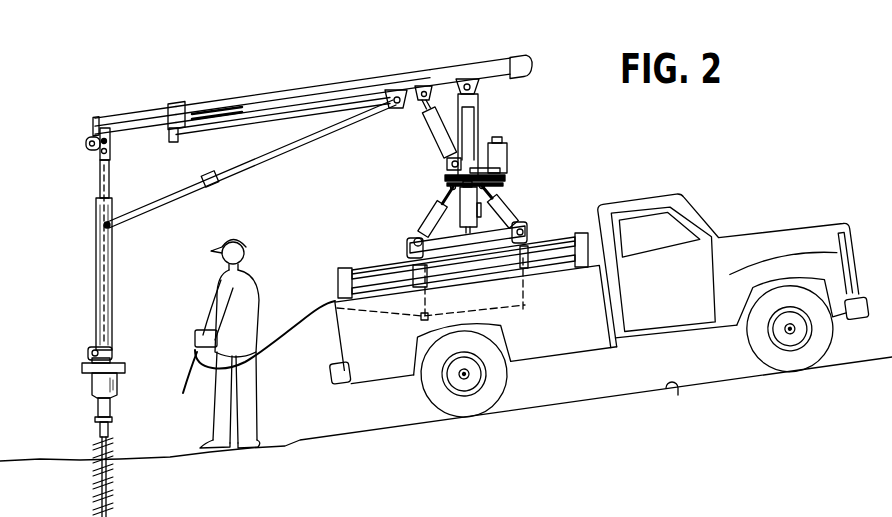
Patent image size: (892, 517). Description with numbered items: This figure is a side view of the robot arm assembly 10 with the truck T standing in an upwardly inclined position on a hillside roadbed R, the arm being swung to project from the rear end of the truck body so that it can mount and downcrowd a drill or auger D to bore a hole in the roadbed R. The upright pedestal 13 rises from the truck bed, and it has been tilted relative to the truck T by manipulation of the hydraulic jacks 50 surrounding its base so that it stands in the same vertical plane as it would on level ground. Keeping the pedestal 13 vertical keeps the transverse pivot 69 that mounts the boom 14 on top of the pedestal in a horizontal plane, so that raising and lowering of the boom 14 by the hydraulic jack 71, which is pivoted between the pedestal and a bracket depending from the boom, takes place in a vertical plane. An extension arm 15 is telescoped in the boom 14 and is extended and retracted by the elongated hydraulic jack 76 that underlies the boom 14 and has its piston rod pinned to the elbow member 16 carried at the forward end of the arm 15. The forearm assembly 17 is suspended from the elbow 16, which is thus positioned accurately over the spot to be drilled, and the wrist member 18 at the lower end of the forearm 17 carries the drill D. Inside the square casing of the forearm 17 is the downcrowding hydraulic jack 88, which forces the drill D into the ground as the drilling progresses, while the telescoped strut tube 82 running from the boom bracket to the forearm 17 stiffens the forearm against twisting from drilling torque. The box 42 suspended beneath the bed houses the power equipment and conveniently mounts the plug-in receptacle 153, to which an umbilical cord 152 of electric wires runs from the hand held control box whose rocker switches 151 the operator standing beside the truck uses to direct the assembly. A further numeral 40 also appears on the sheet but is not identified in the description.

The robot arm assembly 10 is at (483, 60).
The pedestal 13 is at (481, 133).
The boom 14 is at (360, 77).
The extension arm 15 is at (127, 112).
The elbow member 16 is at (88, 153).
The forearm assembly 17 is at (114, 253).
The wrist member 18 is at (113, 353).
The box 42 is at (513, 307).
The hydraulic jacks 50 is at (424, 210).
The transverse pivot 69 is at (481, 91).
The hydraulic jack 71 is at (430, 142).
The hydraulic jack 76 is at (208, 136).
The strut tube 82 is at (278, 160).
The hydraulic jack 88 is at (97, 262).
The rocker switches 151 is at (183, 389).
The umbilical cord 152 is at (302, 320).
The plug-in receptacle 153 is at (421, 320).
The mounting base 40 is at (522, 512).
The drill D is at (119, 392).
The truck T is at (607, 198).
The roadbed R is at (446, 409).